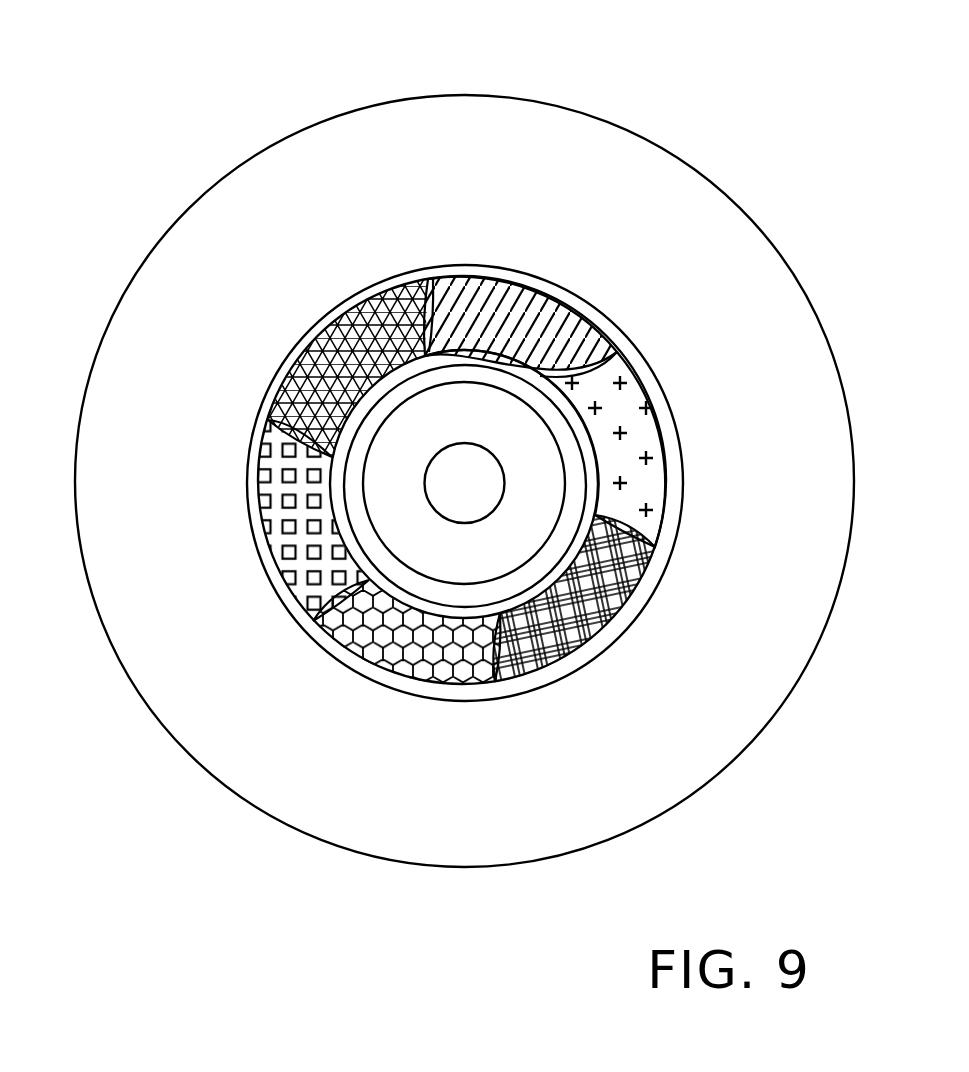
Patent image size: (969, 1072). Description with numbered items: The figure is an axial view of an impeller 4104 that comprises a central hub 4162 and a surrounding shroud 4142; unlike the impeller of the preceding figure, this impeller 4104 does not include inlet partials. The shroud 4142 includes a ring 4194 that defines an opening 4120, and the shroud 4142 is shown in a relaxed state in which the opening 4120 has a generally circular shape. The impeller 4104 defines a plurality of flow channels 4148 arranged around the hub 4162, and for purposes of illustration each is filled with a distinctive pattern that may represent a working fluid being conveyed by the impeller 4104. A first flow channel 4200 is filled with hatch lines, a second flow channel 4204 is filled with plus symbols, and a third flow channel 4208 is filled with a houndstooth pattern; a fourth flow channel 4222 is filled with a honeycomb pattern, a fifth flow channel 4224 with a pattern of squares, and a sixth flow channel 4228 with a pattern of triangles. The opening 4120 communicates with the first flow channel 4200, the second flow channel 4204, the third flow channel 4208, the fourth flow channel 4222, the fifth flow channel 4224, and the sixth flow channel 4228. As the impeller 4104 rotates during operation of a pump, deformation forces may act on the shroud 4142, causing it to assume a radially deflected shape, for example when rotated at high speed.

The impeller 4104 is at (668, 849).
The shroud 4142 is at (357, 807).
The ring 4194 is at (650, 607).
The opening 4120 is at (297, 567).
The fifth flow channel 4224 is at (275, 465).
The sixth flow channel 4228 is at (335, 335).
The hub 4162 is at (496, 335).
The first flow channel 4200 is at (573, 330).
The flow channels 4148 is at (645, 422).
The second flow channel 4204 is at (653, 487).
The third flow channel 4208 is at (552, 657).
The fourth flow channel 4222 is at (467, 660).